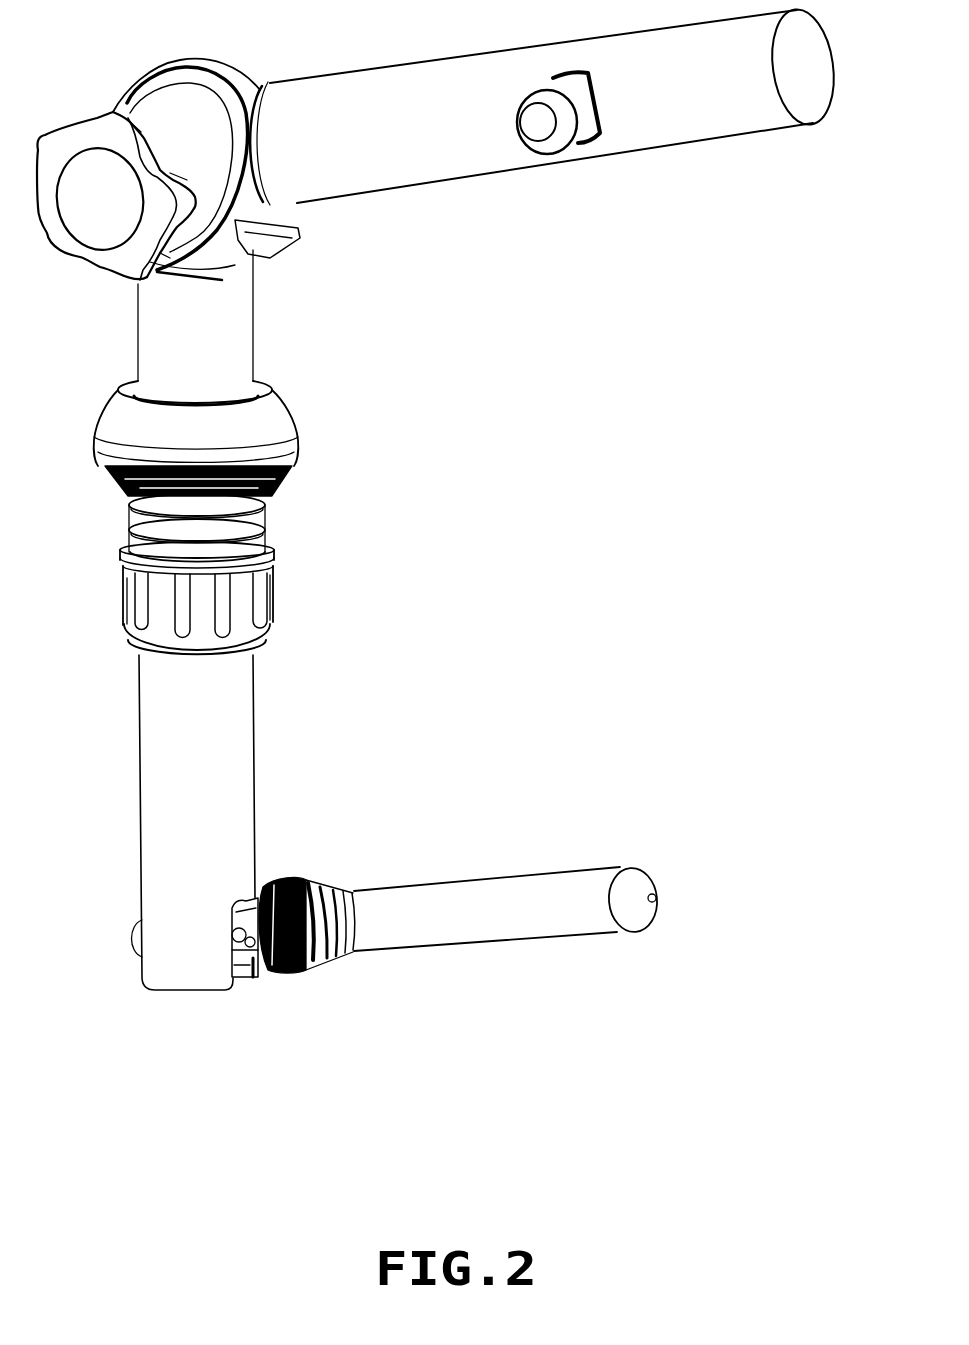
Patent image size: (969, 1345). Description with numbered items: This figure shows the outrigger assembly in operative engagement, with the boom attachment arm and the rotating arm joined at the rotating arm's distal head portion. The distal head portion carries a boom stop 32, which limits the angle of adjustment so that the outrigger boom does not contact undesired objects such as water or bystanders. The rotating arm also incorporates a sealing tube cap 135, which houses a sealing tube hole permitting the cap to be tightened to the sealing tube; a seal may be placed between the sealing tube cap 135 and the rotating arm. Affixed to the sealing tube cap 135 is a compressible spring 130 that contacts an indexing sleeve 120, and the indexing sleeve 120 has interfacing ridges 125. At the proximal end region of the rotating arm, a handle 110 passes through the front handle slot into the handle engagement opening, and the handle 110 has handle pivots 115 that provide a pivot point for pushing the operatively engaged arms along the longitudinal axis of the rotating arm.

The boom stop 32 is at (265, 257).
The handle 110 is at (575, 908).
The handle pivots 115 is at (257, 962).
The indexing sleeve 120 is at (200, 640).
The interfacing ridges 125 is at (274, 592).
The compressible spring 130 is at (262, 525).
The sealing tube cap 135 is at (257, 421).